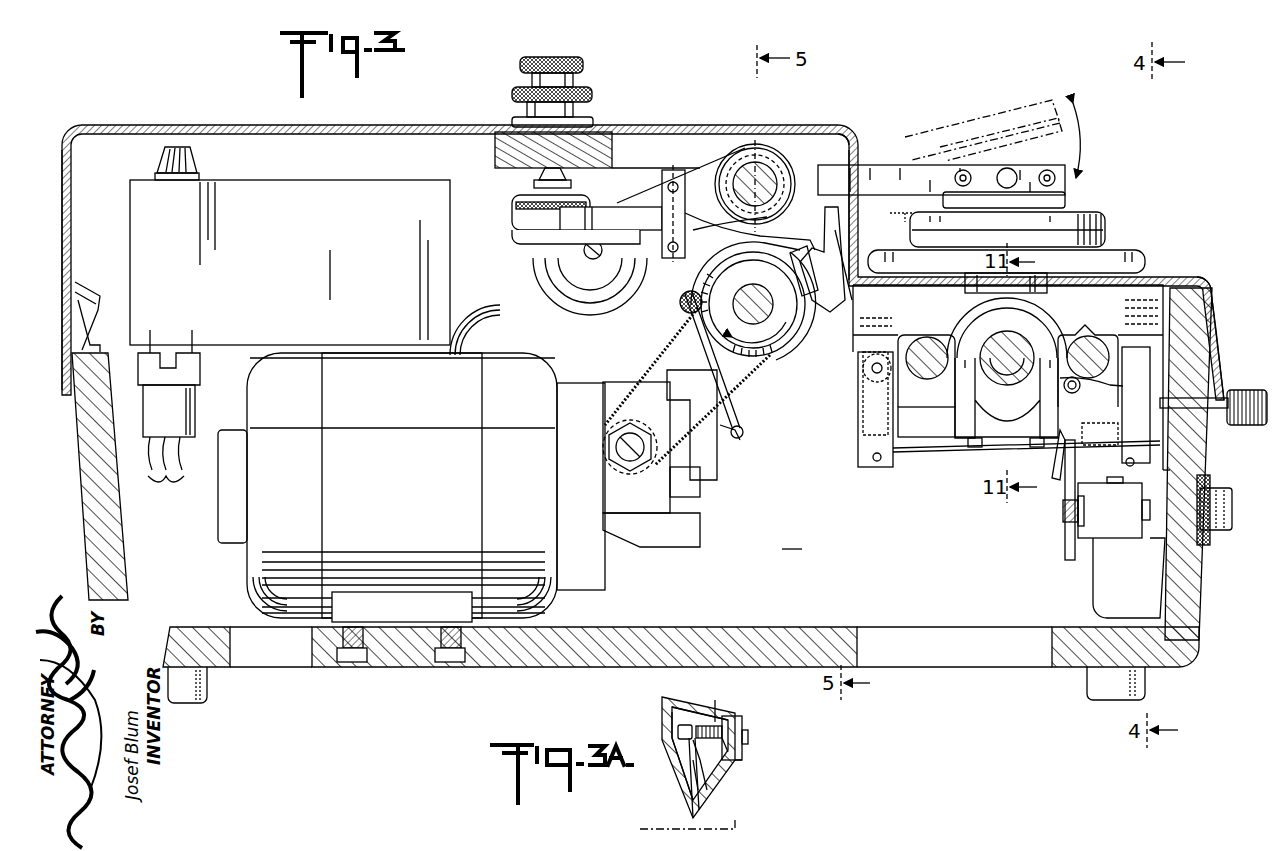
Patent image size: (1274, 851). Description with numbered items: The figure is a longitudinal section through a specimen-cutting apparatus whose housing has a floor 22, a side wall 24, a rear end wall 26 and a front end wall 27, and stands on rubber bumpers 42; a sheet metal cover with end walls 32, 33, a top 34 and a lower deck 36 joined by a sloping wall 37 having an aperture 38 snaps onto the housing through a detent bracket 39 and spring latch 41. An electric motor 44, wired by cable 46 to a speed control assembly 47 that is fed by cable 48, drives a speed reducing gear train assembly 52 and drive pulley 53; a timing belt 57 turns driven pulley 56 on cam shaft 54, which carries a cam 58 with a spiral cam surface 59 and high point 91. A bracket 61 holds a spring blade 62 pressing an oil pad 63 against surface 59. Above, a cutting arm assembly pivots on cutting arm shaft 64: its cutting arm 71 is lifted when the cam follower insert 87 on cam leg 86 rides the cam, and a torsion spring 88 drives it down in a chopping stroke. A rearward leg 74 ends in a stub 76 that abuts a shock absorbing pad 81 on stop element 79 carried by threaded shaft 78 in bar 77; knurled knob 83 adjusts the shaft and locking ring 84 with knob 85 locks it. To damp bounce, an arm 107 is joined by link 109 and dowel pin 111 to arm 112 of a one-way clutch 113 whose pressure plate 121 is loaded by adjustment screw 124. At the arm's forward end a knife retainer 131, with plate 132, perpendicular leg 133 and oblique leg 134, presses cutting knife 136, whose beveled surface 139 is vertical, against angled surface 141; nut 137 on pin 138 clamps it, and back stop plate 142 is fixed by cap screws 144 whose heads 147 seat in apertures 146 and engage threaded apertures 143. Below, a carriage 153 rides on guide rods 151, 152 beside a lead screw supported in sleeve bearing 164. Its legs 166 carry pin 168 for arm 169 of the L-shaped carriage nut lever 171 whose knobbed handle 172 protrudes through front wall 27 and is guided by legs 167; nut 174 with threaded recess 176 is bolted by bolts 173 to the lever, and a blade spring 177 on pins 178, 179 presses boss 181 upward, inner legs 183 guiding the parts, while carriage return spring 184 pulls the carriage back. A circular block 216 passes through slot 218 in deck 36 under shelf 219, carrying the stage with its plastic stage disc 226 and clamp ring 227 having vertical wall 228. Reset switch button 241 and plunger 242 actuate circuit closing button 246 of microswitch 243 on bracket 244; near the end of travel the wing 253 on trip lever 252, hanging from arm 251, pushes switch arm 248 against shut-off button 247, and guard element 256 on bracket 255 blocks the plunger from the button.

In FIG. 3, the floor 22 is at (530, 650).
In FIG. 3, the side wall 24 is at (791, 539).
In FIG. 3, the rear end wall 26 is at (92, 519).
In FIG. 3, the front end wall 27 is at (1204, 306).
In FIG. 3, the end wall 32 is at (64, 152).
In FIG. 3, the end wall 33 is at (1222, 332).
In FIG. 3, the top 34 is at (140, 126).
In FIG. 3, the lower deck 36 is at (1195, 285).
In FIG. 3, the sloping wall 37 is at (846, 128).
In FIG. 3, the rectangular aperture 38 is at (846, 160).
In FIG. 3, the detent bracket 39 is at (96, 292).
In FIG. 3, the spring latch 41 is at (92, 340).
In FIG. 3, the rubber bumpers 42 is at (194, 700).
In FIG. 3, the electric motor 44 is at (396, 464).
In FIG. 3, the cable 46 is at (472, 342).
In FIG. 3, the speed control assembly 47 is at (292, 244).
In FIG. 3, the cable 48 is at (169, 418).
In FIG. 3, the speed reducing gear train assembly 52 is at (682, 515).
In FIG. 3, the drive pulley 53 is at (630, 425).
In FIG. 3, the driven cam shaft 54 is at (770, 292).
In FIG. 3, the driven pulley 56 is at (706, 262).
In FIG. 3, the timing belt 57 is at (670, 318).
In FIG. 3, the cam 58 is at (792, 348).
In FIG. 3, the spirally shaped cam surface 59 is at (706, 350).
In FIG. 3, the bracket 61 is at (680, 440).
In FIG. 3, the spring blade 62 is at (772, 380).
In FIG. 3, the oil pad 63 is at (680, 302).
In FIG. 3, the cutting arm shaft 64 is at (752, 172).
In FIG. 3, the cutting arm 71 is at (886, 194).
In FIG. 3A, the cutting arm 71 is at (672, 742).
In FIG. 3, the leg 74 is at (622, 212).
In FIG. 3, the stub 76 is at (528, 241).
In FIG. 3, the bar 77 is at (495, 145).
In FIG. 3, the threaded shaft 78 is at (540, 173).
In FIG. 3, the circular stop element 79 is at (525, 190).
In FIG. 3, the shock absorbing pad 81 is at (512, 207).
In FIG. 3, the knurled adjustment screw knob 83 is at (583, 63).
In FIG. 3, the locking ring 84 is at (592, 109).
In FIG. 3, the knurled knob 85 is at (575, 83).
In FIG. 3, the cam leg 86 is at (828, 240).
In FIG. 3, the cam follower insert 87 is at (826, 258).
In FIG. 3, the torsion spring 88 is at (775, 170).
In FIG. 3, the high point 91 is at (806, 300).
In FIG. 3, the arm 107 is at (672, 170).
In FIG. 3, the link 109 is at (685, 228).
In FIG. 3, the dowel pin 111 is at (673, 193).
In FIG. 3, the arm 112 is at (667, 246).
In FIG. 3, the one-way clutch 113 is at (552, 262).
In FIG. 3, the pressure plate 121 is at (604, 300).
In FIG. 3, the adjustment screw 124 is at (588, 262).
In FIG. 3A, the knife retainer 131 is at (778, 765).
In FIG. 3A, the plate 132 is at (742, 760).
In FIG. 3A, the perpendicular leg 133 is at (740, 716).
In FIG. 3A, the obliquely extending second leg 134 is at (705, 785).
In FIG. 3, the cutting knife 136 is at (1066, 199).
In FIG. 3A, the cutting knife 136 is at (690, 798).
In FIG. 3A, the nut 137 is at (748, 740).
In FIG. 3, the pin 138 is at (1013, 172).
In FIG. 3A, the pin 138 is at (722, 760).
In FIG. 3A, the beveled surface 139 is at (688, 812).
In FIG. 3A, the surface 141 is at (690, 770).
In FIG. 3A, the back stop plate 142 is at (742, 726).
In FIG. 3A, the threaded apertures 143 is at (724, 700).
In FIG. 3A, the cap screws 144 is at (672, 710).
In FIG. 3A, the apertures 146 is at (670, 745).
In FIG. 3, the heads 147 is at (954, 179).
In FIG. 3A, the heads 147 is at (678, 729).
In FIG. 3, the support guide rod 151 is at (935, 378).
In FIG. 3, the support guide rod 152 is at (1100, 346).
In FIG. 3, the carriage 153 is at (900, 317).
In FIG. 3, the sleeve bearing 164 is at (1008, 332).
In FIG. 3, the legs 166 is at (860, 440).
In FIG. 3, the legs 167 is at (1150, 444).
In FIG. 3, the pin 168 is at (870, 370).
In FIG. 3, the arm 169 is at (858, 400).
In FIG. 3, the L-shaped carriage nut lever 171 is at (938, 428).
In FIG. 3, the knobbed handle 172 is at (1220, 372).
In FIG. 3, the bolts 173 is at (968, 456).
In FIG. 3, the nut 174 is at (977, 450).
In FIG. 3, the semi-circular longitudinal threaded recess 176 is at (1000, 366).
In FIG. 3, the blade spring 177 is at (930, 456).
In FIG. 3, the pin 178 is at (874, 462).
In FIG. 3, the pin 179 is at (1105, 426).
In FIG. 3, the boss 181 is at (1036, 450).
In FIG. 3, the inner legs 183 is at (966, 358).
In FIG. 3, the carriage return spring 184 is at (1064, 392).
In FIG. 3, the circular block 216 is at (966, 280).
In FIG. 3, the transverse slot 218 is at (1046, 286).
In FIG. 3, the circular shelf 219 is at (1140, 258).
In FIG. 3, the circular plastic stage disc 226 is at (912, 213).
In FIG. 3A, the circular plastic stage disc 226 is at (733, 826).
In FIG. 3, the circular clamp ring 227 is at (1116, 217).
In FIG. 3, the vertical wall 228 is at (1105, 232).
In FIG. 3, the momentary action reset switch button 241 is at (1231, 506).
In FIG. 3, the plunger 242 is at (1210, 536).
In FIG. 3, the reset microswitch 243 is at (1122, 508).
In FIG. 3, the bracket 244 is at (1094, 548).
In FIG. 3, the circuit closing button 246 is at (1142, 514).
In FIG. 3, the shut-off button 247 is at (1078, 522).
In FIG. 3, the switch arm 248 is at (1064, 513).
In FIG. 3, the arm 251 is at (1108, 398).
In FIG. 3, the shut-off trip lever 252 is at (1072, 468).
In FIG. 3, the wing 253 is at (1058, 492).
In FIG. 3, the bracket 255 is at (1206, 444).
In FIG. 3, the guard element 256 is at (1152, 540).